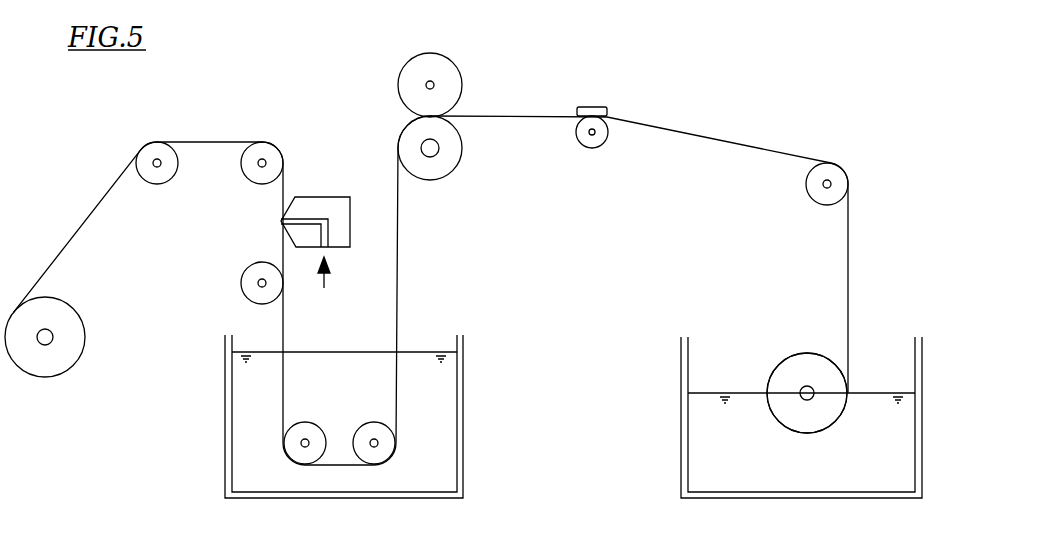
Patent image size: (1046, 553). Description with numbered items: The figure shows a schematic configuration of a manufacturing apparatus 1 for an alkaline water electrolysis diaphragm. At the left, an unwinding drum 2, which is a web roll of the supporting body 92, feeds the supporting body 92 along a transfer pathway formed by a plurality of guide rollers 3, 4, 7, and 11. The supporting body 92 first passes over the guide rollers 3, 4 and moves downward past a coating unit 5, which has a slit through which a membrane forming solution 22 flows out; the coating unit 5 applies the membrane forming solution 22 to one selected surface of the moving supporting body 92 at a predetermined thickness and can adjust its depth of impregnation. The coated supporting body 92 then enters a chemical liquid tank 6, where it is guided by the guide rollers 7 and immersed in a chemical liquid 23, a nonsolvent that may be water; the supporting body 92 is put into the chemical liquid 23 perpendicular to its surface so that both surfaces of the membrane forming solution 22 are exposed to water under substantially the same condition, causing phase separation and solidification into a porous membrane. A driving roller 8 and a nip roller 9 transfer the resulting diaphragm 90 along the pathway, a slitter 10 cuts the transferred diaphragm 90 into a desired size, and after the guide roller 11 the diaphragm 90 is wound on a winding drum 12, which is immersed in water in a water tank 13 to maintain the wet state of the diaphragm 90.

The manufacturing apparatus 1 is at (746, 66).
The unwinding drum 2 is at (86, 338).
The guide roller 3 is at (160, 185).
The guide roller 4 is at (247, 178).
The coating unit 5 is at (339, 194).
The chemical liquid tank 6 is at (225, 446).
The guide roller 7 is at (352, 457).
The driving roller 8 is at (452, 171).
The nip roller 9 is at (457, 69).
The slitter 10 is at (606, 107).
The guide roller 11 is at (807, 191).
The winding drum 12 is at (784, 360).
The water tank 13 is at (681, 367).
The membrane forming solution 22 is at (325, 290).
The chemical liquid 23 is at (356, 405).
The diaphragm 90 is at (806, 353).
The supporting body 92 is at (100, 200).